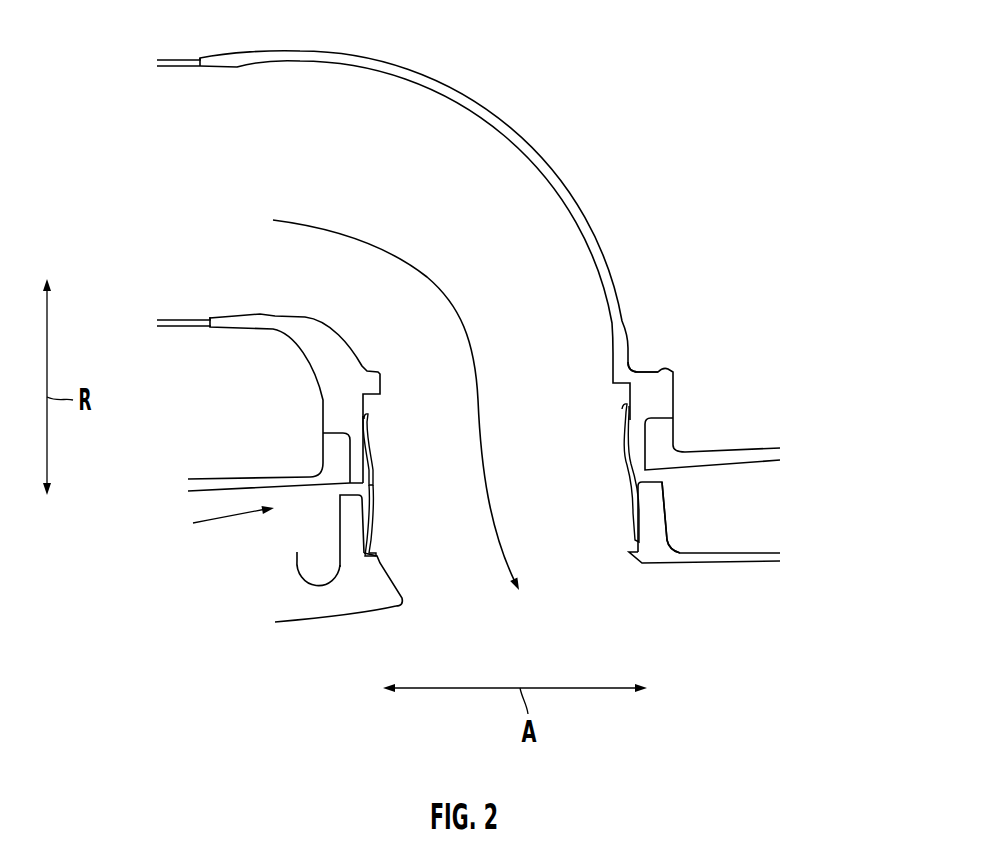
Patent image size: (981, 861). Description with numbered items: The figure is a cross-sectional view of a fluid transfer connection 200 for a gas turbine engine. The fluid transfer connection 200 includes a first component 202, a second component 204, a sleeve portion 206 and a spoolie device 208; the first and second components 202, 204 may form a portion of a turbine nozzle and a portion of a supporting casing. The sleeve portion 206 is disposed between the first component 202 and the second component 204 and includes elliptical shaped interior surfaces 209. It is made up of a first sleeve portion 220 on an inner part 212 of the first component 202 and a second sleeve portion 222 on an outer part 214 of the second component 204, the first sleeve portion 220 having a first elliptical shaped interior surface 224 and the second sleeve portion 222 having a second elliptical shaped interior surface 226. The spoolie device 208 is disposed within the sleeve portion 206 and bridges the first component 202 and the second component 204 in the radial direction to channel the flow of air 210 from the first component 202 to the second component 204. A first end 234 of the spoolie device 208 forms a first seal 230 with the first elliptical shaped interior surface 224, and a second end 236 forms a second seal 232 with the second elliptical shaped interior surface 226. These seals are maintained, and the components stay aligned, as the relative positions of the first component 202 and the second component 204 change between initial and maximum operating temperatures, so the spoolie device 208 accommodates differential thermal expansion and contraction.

The fluid transfer connection 200 is at (657, 80).
The first component 202 is at (520, 137).
The second component 204 is at (290, 622).
The sleeve portion 206 is at (211, 526).
The spoolie device 208 is at (624, 472).
The elliptical shaped interior surfaces 209 is at (713, 461).
The flow of air 210 is at (393, 253).
The inner part 212 is at (323, 347).
The outer part 214 is at (340, 537).
The first sleeve portion 220 is at (343, 407).
The second sleeve portion 222 is at (353, 560).
The first elliptical shaped interior surface 224 is at (626, 365).
The second elliptical shaped interior surface 226 is at (665, 552).
The first seal 230 is at (633, 417).
The second seal 232 is at (640, 527).
The first end 234 is at (368, 432).
The second end 236 is at (372, 533).